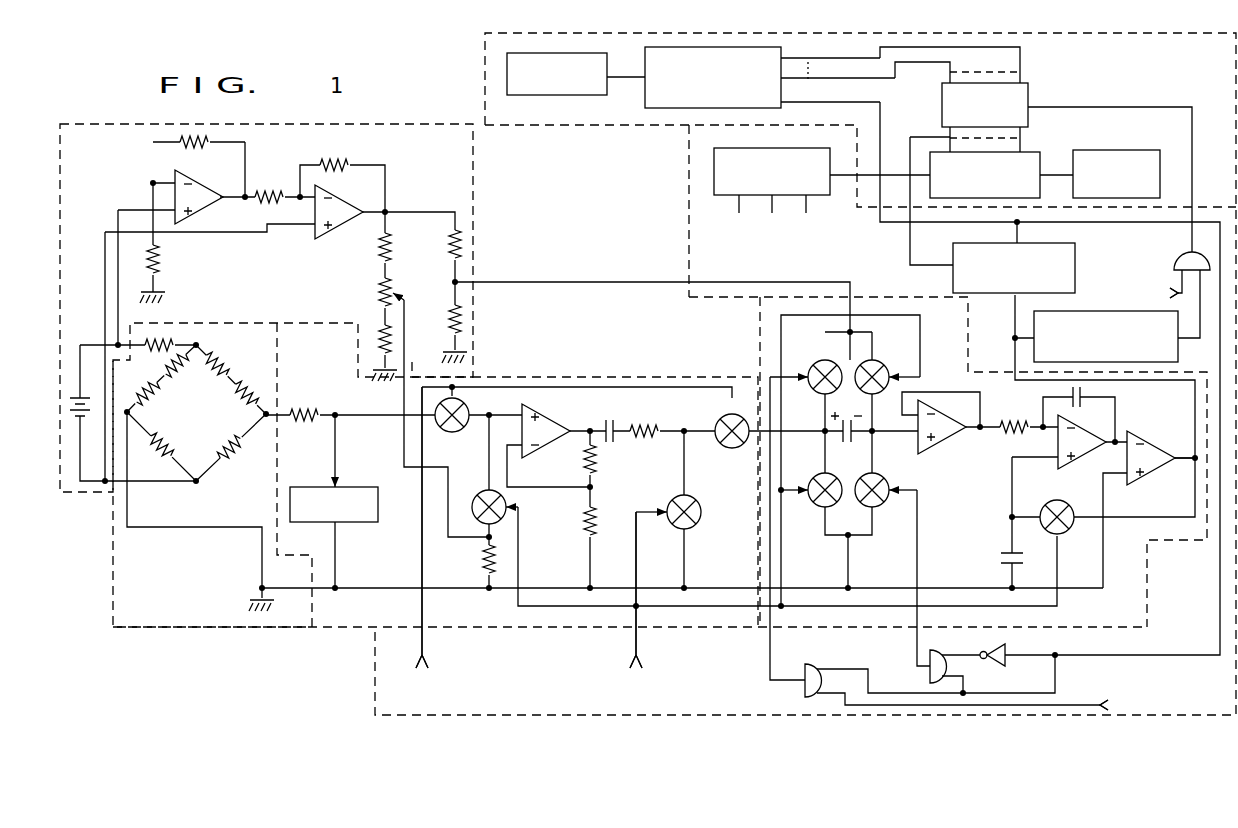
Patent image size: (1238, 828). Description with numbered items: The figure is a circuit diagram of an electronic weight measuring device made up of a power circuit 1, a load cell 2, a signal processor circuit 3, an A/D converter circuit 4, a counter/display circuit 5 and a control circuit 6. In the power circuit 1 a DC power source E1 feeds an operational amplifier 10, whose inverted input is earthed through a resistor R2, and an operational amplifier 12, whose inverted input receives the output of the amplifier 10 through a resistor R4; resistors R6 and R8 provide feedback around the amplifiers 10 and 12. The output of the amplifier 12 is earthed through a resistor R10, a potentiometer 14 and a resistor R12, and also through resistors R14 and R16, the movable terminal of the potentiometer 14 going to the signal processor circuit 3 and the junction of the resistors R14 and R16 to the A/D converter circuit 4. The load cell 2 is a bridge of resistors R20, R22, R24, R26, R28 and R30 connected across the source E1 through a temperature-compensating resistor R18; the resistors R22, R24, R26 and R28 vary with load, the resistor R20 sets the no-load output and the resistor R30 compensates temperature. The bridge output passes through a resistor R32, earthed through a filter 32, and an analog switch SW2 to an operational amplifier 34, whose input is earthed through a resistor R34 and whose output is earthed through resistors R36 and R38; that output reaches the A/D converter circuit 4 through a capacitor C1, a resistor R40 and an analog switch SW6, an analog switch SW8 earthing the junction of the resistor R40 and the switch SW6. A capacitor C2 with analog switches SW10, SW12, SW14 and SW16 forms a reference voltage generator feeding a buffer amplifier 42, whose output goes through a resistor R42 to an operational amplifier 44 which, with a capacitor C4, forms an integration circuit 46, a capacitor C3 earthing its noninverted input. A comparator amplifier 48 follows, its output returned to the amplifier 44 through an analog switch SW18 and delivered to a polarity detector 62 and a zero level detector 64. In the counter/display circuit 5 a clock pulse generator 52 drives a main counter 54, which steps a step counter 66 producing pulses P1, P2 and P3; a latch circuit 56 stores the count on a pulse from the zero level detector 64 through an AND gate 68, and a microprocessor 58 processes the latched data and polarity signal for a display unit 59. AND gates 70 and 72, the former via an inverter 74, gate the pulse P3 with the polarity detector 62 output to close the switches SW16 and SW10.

The power circuit 1 is at (58, 296).
The load cell 2 is at (113, 578).
The signal processor circuit 3 is at (517, 377).
The A/D converter circuit 4 is at (760, 345).
The counter/display circuit 5 is at (596, 125).
The control circuit 6 is at (689, 205).
The operational amplifier 10 is at (203, 186).
The operational amplifier 12 is at (345, 200).
The potentiometer 14 is at (385, 286).
The filter 32 is at (357, 522).
The operational amplifier 34 is at (563, 428).
The buffer amplifier 42 is at (948, 442).
The operational amplifier 44 is at (1090, 460).
The integration circuit 46 is at (1122, 425).
The operational amplifier 48 is at (1165, 470).
The clock pulse generator 52 is at (1118, 150).
The main counter 54 is at (1033, 152).
The latch circuit 56 is at (1032, 92).
The microprocessor 58 is at (785, 93).
The display unit 59 is at (607, 88).
The polarity detector 62 is at (1075, 255).
The zero level detector 64 is at (1178, 350).
The step counter 66 is at (722, 197).
The AND gate 68 is at (1174, 254).
The AND gate 70 is at (926, 680).
The AND gate 72 is at (800, 674).
The inverter 74 is at (1008, 664).
The DC power source E1 is at (70, 405).
The resistor R2 is at (155, 266).
The resistor R4 is at (275, 194).
The resistor R6 is at (199, 154).
The resistor R8 is at (338, 163).
The resistor R10 is at (392, 240).
The resistor R12 is at (381, 342).
The resistor R14 is at (450, 252).
The resistor R16 is at (448, 302).
The resistor R18 is at (152, 334).
The resistor R20 is at (184, 370).
The resistor R22 is at (150, 398).
The resistor R24 is at (170, 459).
The resistor R26 is at (236, 455).
The resistor R28 is at (250, 393).
The resistor R30 is at (222, 366).
The resistor R32 is at (312, 417).
The resistor R34 is at (482, 543).
The resistor R36 is at (588, 460).
The resistor R38 is at (588, 522).
The resistor R40 is at (648, 429).
The resistor R42 is at (1013, 416).
The capacitor C1 is at (611, 445).
The capacitor C2 is at (853, 445).
The capacitor C3 is at (997, 565).
The capacitor C4 is at (1082, 399).
The analog switch SW2 is at (466, 430).
The analog switch SW6 is at (718, 446).
The analog switch SW8 is at (700, 525).
The analog switch SW10 is at (812, 366).
The analog switch SW12 is at (812, 505).
The analog switch SW14 is at (878, 372).
The analog switch SW16 is at (883, 480).
The analog switch SW18 is at (1042, 512).
The pulse signal P1 is at (685, 458).
The pulse signal P2 is at (595, 458).
The pulse signal P3 is at (985, 470).